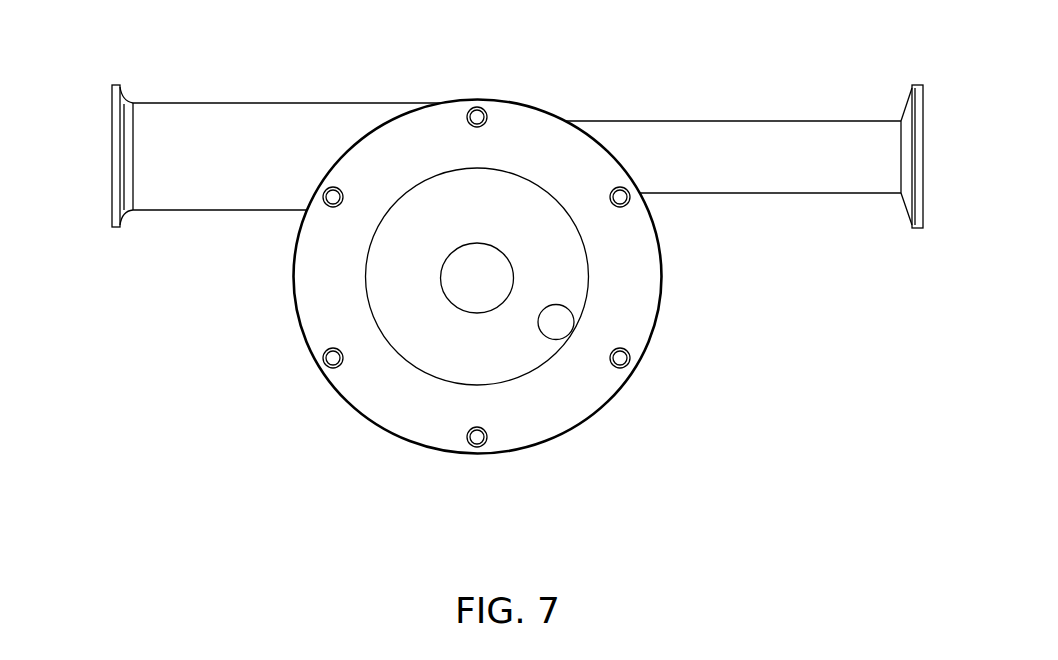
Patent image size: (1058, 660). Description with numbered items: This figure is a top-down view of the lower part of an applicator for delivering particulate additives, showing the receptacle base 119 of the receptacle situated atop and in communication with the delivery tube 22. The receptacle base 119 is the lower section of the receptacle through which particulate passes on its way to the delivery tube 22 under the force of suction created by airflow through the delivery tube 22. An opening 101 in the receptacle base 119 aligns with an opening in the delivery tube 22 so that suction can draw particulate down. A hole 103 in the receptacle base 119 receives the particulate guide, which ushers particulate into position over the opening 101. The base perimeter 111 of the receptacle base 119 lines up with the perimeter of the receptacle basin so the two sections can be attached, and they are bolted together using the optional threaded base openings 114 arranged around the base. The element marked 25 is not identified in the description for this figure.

The inlet pipe with flange 25 is at (112, 152).
The delivery tube 22 is at (744, 247).
The receptacle base 119 is at (293, 279).
The base perimeter 111 is at (511, 360).
The hole 103 is at (360, 411).
The opening 101 is at (641, 400).
The threaded base openings 114 is at (476, 343).